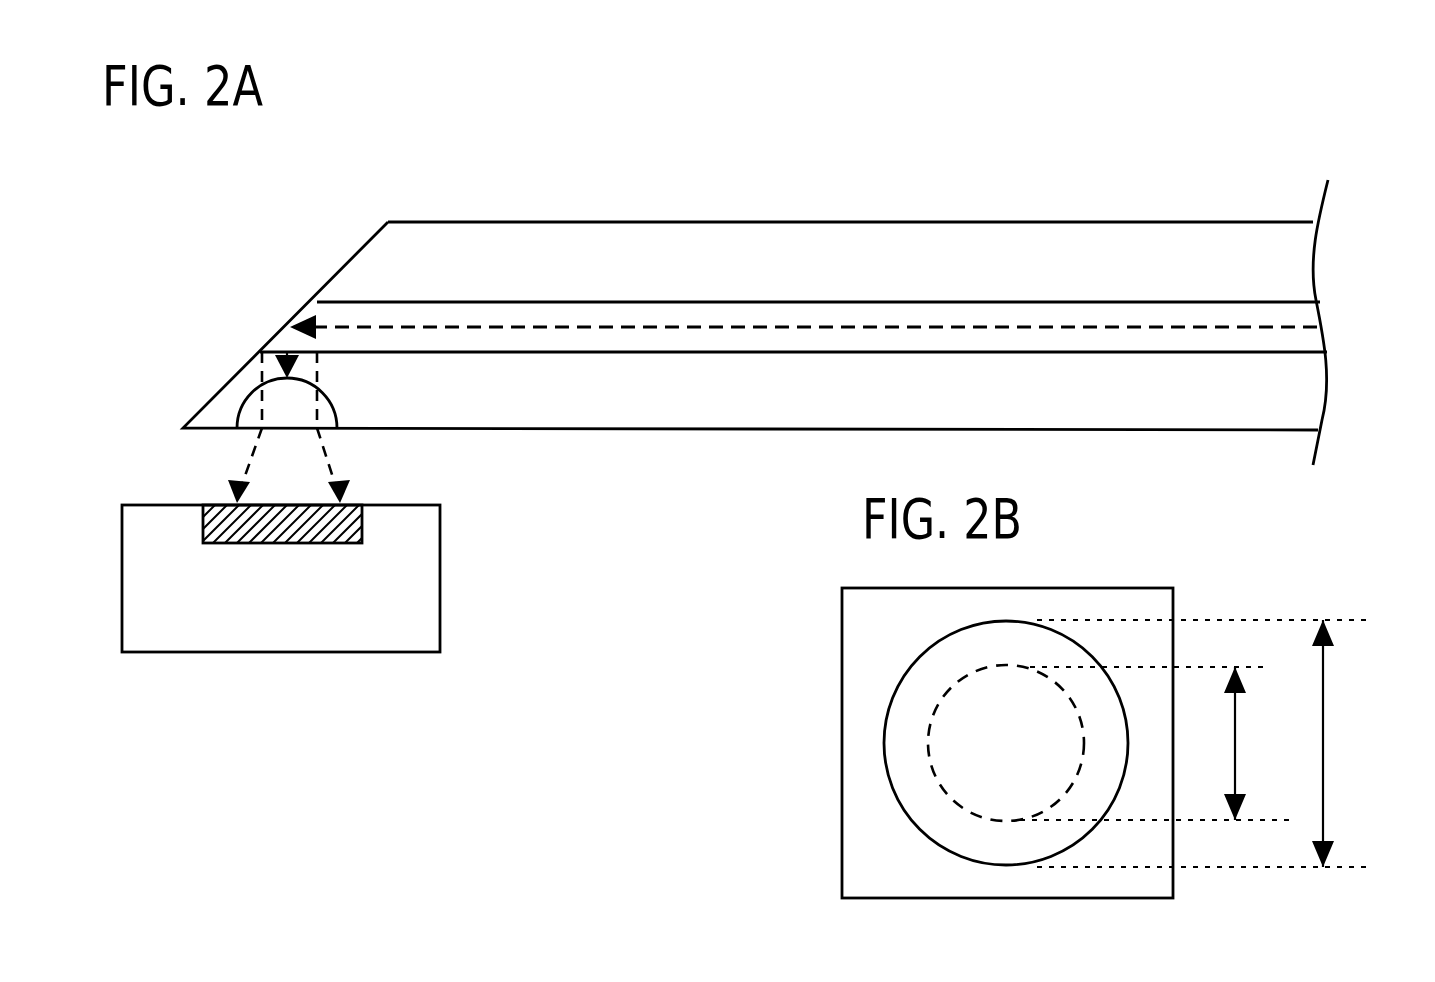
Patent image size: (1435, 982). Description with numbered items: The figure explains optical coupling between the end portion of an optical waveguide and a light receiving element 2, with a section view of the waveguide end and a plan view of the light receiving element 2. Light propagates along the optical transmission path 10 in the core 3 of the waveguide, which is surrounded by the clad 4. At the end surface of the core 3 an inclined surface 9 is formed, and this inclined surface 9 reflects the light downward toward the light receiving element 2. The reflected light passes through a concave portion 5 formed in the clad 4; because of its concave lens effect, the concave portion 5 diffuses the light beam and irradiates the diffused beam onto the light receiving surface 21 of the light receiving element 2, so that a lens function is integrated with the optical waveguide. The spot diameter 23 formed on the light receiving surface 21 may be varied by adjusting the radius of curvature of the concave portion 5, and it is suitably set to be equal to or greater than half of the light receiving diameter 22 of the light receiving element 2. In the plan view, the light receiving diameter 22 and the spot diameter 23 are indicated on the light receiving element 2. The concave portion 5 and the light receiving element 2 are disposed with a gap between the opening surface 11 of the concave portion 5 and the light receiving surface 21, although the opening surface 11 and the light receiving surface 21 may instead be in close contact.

In FIG. 2A, the light receiving element 2 is at (442, 598).
In FIG. 2B, the light receiving element 2 is at (838, 810).
In FIG. 2A, the core 3 is at (548, 302).
In FIG. 2A, the clad 4 is at (1178, 222).
In FIG. 2A, the concave portion 5 is at (333, 400).
In FIG. 2A, the inclined surface 9 is at (298, 313).
In FIG. 2A, the optical transmission path 10 is at (1012, 327).
In FIG. 2A, the opening surface 11 is at (280, 430).
In FIG. 2A, the light receiving surface 21 is at (273, 505).
In FIG. 2B, the light receiving surface 21 is at (903, 722).
In FIG. 2B, the light receiving diameter 22 is at (1327, 750).
In FIG. 2B, the spot diameter 23 is at (1237, 737).